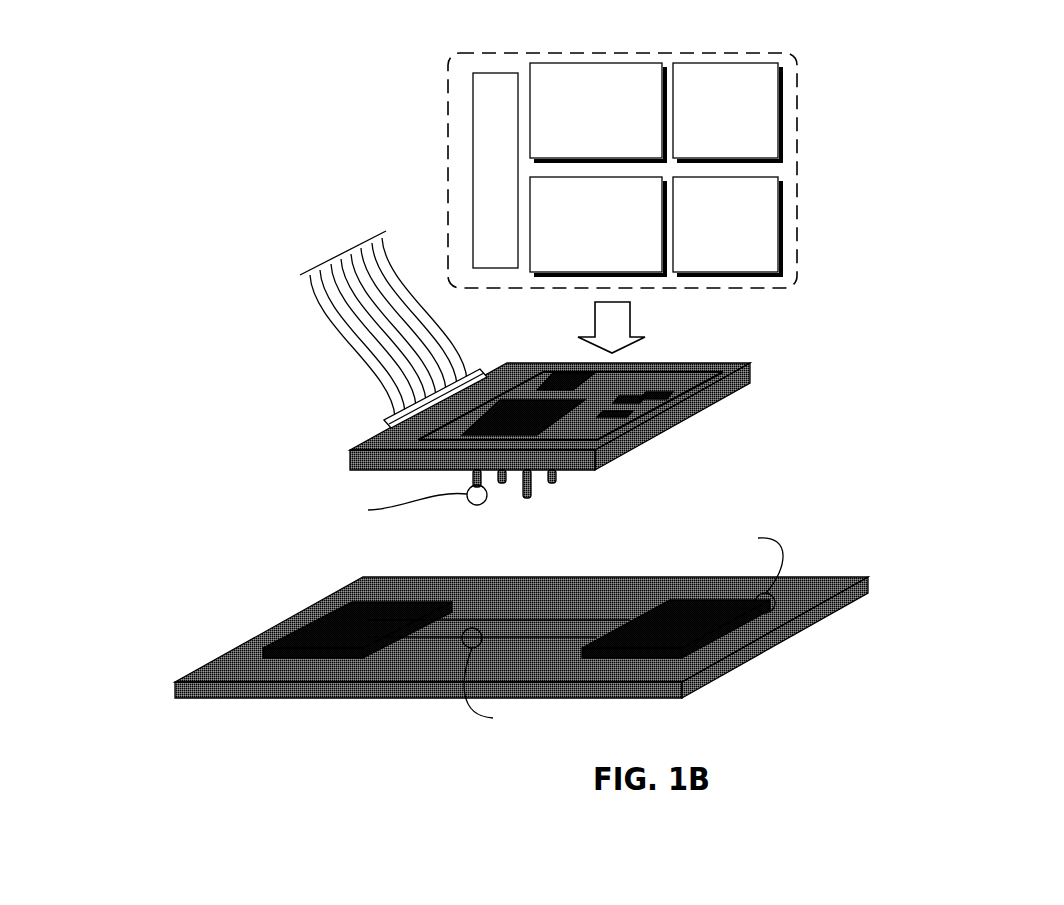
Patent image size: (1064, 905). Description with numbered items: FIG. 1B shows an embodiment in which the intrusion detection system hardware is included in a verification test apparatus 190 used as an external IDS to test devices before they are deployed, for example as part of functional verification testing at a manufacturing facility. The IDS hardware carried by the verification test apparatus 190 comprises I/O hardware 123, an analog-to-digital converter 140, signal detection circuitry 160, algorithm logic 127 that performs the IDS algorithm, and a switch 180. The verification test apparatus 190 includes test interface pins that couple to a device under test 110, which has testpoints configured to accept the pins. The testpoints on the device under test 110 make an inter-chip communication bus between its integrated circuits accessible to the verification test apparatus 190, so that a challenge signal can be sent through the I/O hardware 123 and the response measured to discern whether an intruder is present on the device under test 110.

The I/O hardware 123 is at (591, 170).
The analog-to-digital converter 140 is at (597, 112).
The signal detection circuitry 160 is at (727, 112).
The algorithm logic 127 is at (597, 226).
The switch 180 is at (727, 226).
The verification test apparatus 190 is at (750, 366).
The device under test 110 is at (868, 581).